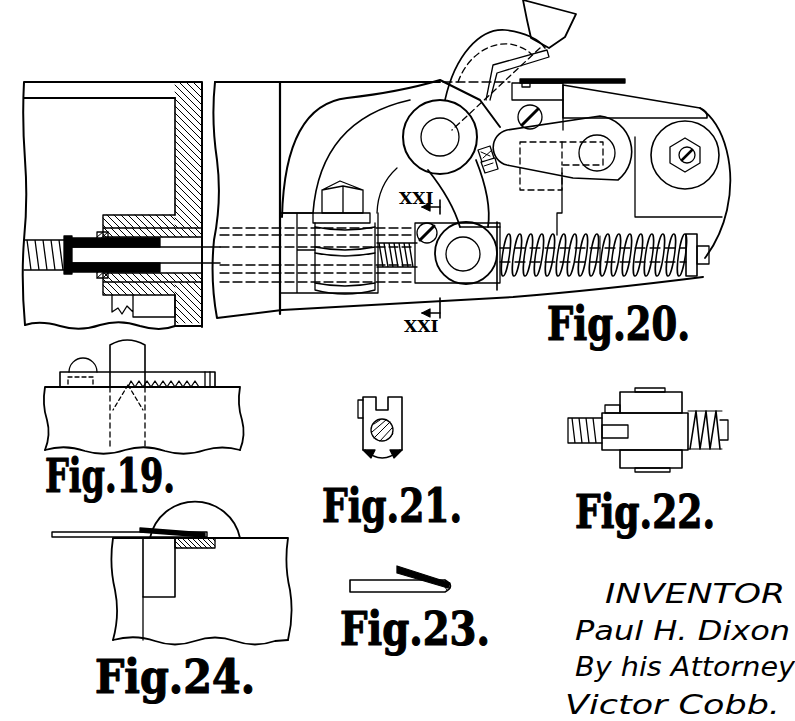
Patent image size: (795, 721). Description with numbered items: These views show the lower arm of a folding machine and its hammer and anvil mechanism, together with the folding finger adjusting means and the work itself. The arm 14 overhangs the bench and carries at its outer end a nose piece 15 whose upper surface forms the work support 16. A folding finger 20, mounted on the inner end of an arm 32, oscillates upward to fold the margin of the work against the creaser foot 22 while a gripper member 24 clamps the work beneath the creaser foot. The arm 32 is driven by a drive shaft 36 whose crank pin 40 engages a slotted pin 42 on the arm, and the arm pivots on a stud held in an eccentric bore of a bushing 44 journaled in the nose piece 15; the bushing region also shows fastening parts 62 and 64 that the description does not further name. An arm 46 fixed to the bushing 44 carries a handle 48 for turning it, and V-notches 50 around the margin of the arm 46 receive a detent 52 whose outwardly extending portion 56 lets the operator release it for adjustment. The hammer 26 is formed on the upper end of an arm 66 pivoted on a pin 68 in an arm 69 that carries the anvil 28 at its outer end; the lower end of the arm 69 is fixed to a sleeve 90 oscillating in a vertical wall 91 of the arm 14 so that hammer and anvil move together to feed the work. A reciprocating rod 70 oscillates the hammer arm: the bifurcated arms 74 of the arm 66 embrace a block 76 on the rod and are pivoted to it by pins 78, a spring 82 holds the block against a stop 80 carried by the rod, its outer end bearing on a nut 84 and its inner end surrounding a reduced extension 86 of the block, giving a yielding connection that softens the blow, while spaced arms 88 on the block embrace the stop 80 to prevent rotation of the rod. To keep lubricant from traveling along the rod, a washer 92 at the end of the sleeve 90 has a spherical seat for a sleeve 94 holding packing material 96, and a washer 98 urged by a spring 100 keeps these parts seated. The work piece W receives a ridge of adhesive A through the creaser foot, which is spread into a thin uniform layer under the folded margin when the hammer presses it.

In FIG. 20, the arm 14 is at (93, 82).
In FIG. 24, the arm 14 is at (280, 570).
In FIG. 20, the nose piece 15 is at (728, 192).
In FIG. 19, the nose piece 15 is at (230, 396).
In FIG. 20, the work support 16 is at (650, 103).
In FIG. 20, the folding finger 20 is at (520, 63).
In FIG. 20, the creaser foot 22 is at (550, 39).
In FIG. 24, the gripper member 24 is at (168, 580).
In FIG. 20, the hammer 26 is at (488, 36).
In FIG. 24, the hammer 26 is at (208, 510).
In FIG. 20, the anvil 28 is at (566, 88).
In FIG. 20, the arm 32 is at (522, 170).
In FIG. 20, the drive shaft 36 is at (542, 190).
In FIG. 20, the crank pin 40 is at (573, 172).
In FIG. 20, the slotted pin 42 is at (612, 146).
In FIG. 20, the bushing 44 is at (719, 170).
In FIG. 19, the arm 46 is at (207, 372).
In FIG. 19, the handle 48 is at (82, 364).
In FIG. 19, the V-notches 50 is at (162, 385).
In FIG. 19, the detent 52 is at (146, 415).
In FIG. 19, the outwardly extending portion 56 is at (140, 350).
In FIG. 20, the screw 62 is at (694, 150).
In FIG. 20, the nut 64 is at (705, 150).
In FIG. 20, the arm 66 is at (412, 178).
In FIG. 20, the pin 68 is at (440, 120).
In FIG. 20, the arm 69 is at (365, 130).
In FIG. 20, the reciprocating rod 70 is at (62, 272).
In FIG. 21, the reciprocating rod 70 is at (371, 431).
In FIG. 22, the reciprocating rod 70 is at (568, 432).
In FIG. 22, the arms 74 is at (676, 392).
In FIG. 20, the block 76 is at (494, 290).
In FIG. 22, the block 76 is at (672, 416).
In FIG. 20, the pins 78 is at (467, 271).
In FIG. 22, the pins 78 is at (648, 388).
In FIG. 20, the stop 80 is at (415, 237).
In FIG. 21, the stop 80 is at (402, 406).
In FIG. 20, the spring 82 is at (618, 277).
In FIG. 22, the spring 82 is at (722, 445).
In FIG. 20, the nut 84 is at (704, 264).
In FIG. 20, the reduced extension 86 is at (525, 278).
In FIG. 22, the reduced extension 86 is at (724, 418).
In FIG. 21, the spaced arms 88 is at (363, 454).
In FIG. 22, the spaced arms 88 is at (605, 410).
In FIG. 20, the sleeve 90 is at (172, 215).
In FIG. 20, the vertical wall 91 is at (175, 131).
In FIG. 20, the washer 92 is at (100, 231).
In FIG. 20, the sleeve 94 is at (104, 278).
In FIG. 20, the packing material 96 is at (90, 238).
In FIG. 20, the washer 98 is at (66, 238).
In FIG. 20, the spring 100 is at (50, 270).
In FIG. 23, the adhesive A is at (400, 569).
In FIG. 24, the adhesive A is at (140, 530).
In FIG. 23, the work piece W is at (350, 588).
In FIG. 24, the work piece W is at (90, 538).